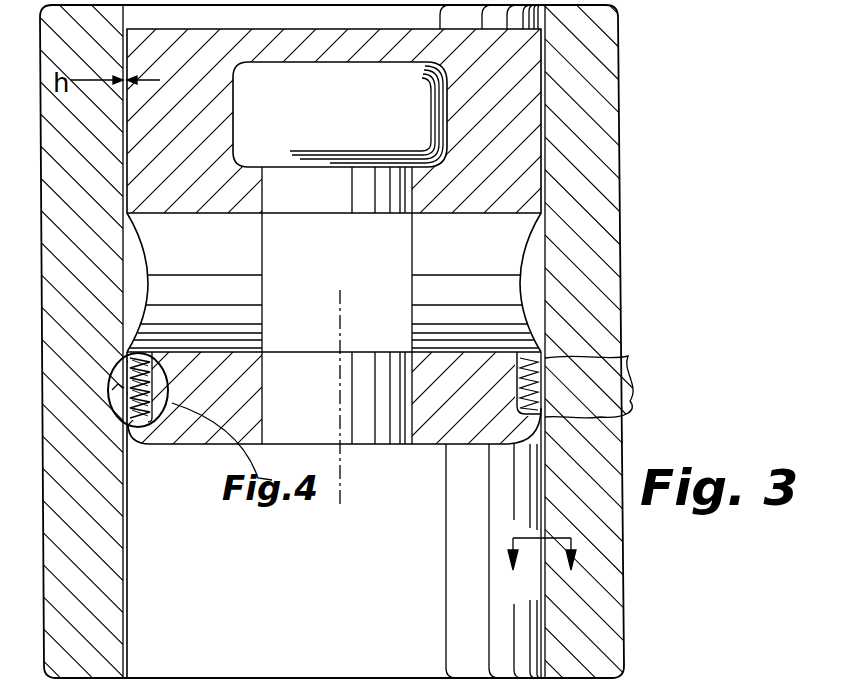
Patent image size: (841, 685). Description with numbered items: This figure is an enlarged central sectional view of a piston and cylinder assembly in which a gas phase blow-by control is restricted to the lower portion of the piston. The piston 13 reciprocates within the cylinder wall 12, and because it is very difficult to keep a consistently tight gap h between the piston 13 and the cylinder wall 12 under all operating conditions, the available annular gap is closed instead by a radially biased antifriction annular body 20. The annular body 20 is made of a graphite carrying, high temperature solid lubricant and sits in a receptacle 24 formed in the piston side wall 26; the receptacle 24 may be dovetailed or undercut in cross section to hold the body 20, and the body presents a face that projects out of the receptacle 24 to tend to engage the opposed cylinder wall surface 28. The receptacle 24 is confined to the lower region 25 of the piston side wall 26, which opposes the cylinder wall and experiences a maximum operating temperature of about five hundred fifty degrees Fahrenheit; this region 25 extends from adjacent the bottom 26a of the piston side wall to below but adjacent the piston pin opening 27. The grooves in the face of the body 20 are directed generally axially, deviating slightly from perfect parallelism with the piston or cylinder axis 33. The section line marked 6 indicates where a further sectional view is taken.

The cylinder wall 12 is at (103, 618).
The piston 13 is at (220, 102).
The antifriction annular body 20 is at (129, 438).
The receptacle 24 is at (165, 360).
The lower region of the piston side wall 25 is at (598, 385).
The piston side wall 26 is at (545, 140).
The bottom of piston side wall 26a is at (149, 440).
The piston pin opening 27 is at (448, 352).
The cylinder wall surface 28 is at (127, 548).
The piston or cylinder axis 33 is at (343, 470).
The section line 6- 6 is at (539, 575).